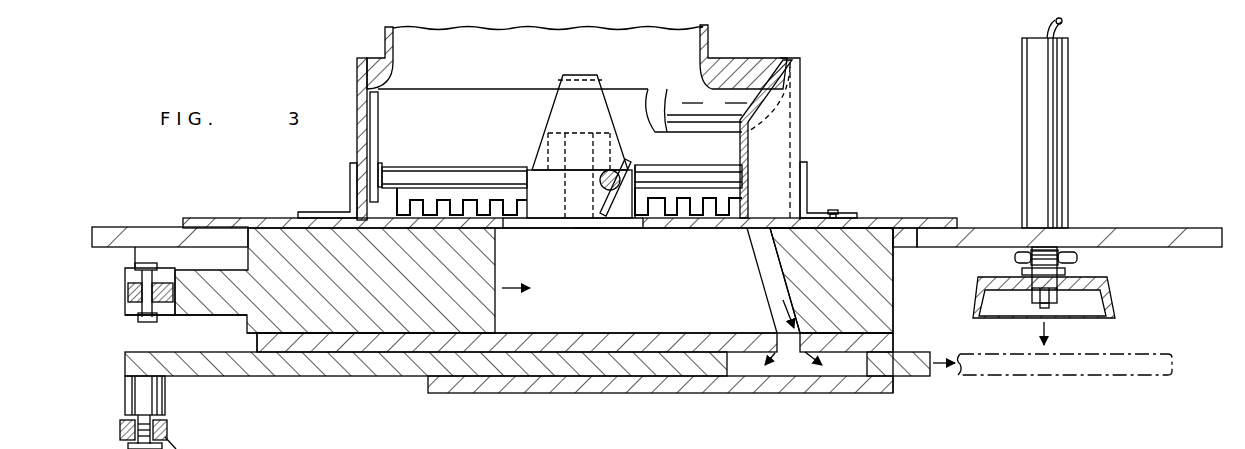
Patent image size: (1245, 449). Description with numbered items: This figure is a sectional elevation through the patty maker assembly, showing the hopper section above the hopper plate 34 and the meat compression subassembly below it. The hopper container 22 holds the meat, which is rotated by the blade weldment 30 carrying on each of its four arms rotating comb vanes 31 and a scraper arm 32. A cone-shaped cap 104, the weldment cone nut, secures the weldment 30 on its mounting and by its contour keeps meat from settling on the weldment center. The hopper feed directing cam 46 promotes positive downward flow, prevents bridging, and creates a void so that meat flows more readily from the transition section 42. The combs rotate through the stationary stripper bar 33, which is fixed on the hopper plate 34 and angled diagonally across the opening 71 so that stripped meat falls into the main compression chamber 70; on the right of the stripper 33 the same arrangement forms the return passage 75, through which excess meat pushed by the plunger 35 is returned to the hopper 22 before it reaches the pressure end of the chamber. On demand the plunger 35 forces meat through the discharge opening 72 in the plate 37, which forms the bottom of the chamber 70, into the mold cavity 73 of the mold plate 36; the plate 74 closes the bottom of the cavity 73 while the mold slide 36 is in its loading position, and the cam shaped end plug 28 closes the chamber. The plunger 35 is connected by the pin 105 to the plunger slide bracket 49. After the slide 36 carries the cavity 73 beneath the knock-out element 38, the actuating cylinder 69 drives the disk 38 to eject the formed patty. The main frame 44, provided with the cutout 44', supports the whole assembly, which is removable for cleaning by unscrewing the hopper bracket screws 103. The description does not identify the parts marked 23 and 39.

The hopper container 22 is at (800, 120).
The base assembly 23 is at (423, 357).
The cam shaped end plug 28 is at (897, 300).
The blade weldment 30 is at (447, 166).
The rotating comb vanes 31 is at (627, 170).
The scraper arm 32 is at (378, 122).
The stationary stripper bar 33 is at (648, 213).
The hopper plate 34 is at (952, 222).
The plunger 35 is at (488, 252).
The mold plate 36 is at (295, 368).
The plate 37 is at (543, 345).
The knock-out element 38 is at (1110, 305).
The bracket 39 is at (350, 175).
The transition section 42 is at (735, 60).
The main frame 44 is at (1069, 240).
The cutout 44' is at (518, 254).
The hopper feed directing cam 46 is at (692, 105).
The plunger slide bracket 49 is at (128, 290).
The actuating element 69 is at (1053, 178).
The main compression chamber 70 is at (661, 265).
The opening 71 is at (588, 222).
The discharge opening 72 is at (785, 332).
The mold cavity 73 is at (795, 368).
The plate 74 is at (623, 385).
The return passage 75 is at (648, 220).
The hopper bracket screws 103 is at (838, 213).
The cone-shaped cap 104 is at (565, 75).
The pin 105 is at (143, 303).